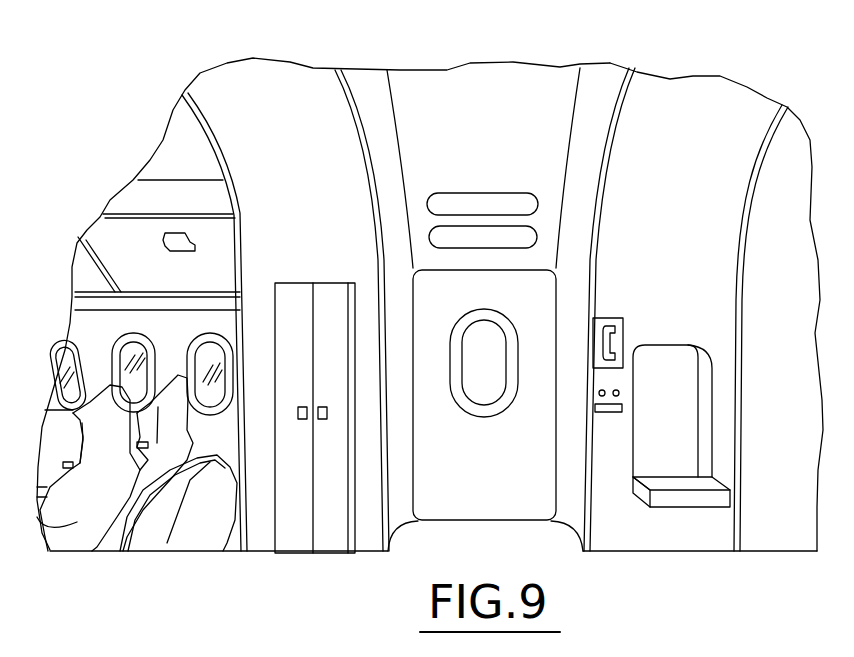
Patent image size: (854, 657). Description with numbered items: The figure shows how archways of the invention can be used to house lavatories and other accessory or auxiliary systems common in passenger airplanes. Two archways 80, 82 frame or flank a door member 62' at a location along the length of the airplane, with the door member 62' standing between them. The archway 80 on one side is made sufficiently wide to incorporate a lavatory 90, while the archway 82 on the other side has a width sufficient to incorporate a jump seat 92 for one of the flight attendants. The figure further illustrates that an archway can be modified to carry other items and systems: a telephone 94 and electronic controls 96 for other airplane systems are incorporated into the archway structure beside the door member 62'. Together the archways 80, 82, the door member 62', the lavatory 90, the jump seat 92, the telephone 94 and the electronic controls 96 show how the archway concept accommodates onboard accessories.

The archway 80 is at (297, 75).
The archway 82 is at (705, 83).
The lavatory 90 is at (323, 543).
The door member 62' is at (485, 309).
The jump seat 92 is at (683, 414).
The telephone 94 is at (618, 318).
The electronic controls 96 is at (607, 413).